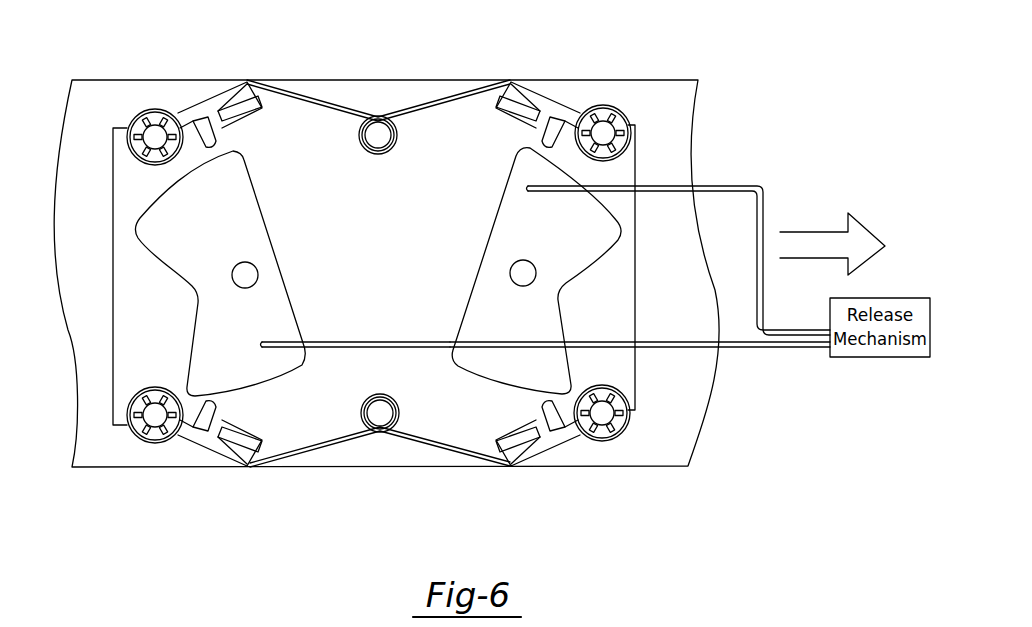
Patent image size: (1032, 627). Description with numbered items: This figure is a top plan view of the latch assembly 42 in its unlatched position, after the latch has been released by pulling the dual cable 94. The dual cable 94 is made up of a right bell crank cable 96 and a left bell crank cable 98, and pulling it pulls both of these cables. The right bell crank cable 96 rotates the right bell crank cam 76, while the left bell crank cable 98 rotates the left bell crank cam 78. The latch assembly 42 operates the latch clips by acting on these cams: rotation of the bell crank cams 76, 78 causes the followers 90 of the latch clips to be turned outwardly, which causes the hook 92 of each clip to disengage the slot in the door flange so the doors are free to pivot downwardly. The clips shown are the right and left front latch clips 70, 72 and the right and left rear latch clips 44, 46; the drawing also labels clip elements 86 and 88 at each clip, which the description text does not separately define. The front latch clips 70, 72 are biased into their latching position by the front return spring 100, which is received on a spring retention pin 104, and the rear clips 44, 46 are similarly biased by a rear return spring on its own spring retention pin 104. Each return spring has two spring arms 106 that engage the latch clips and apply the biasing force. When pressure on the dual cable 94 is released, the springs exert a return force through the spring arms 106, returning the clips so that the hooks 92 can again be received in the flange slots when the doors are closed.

The latch assembly 42 is at (74, 128).
The right rear latch clip 44 is at (605, 450).
The left rear latch clip 46 is at (153, 453).
The right front latch clip 70 is at (622, 92).
The left front latch clip 72 is at (153, 92).
The bell crank cam 76 is at (482, 307).
The bell crank cam 78 is at (282, 306).
The pinion gear 86 is at (150, 135).
The gear bushing 88 is at (622, 113).
The follower 90 is at (215, 148).
The hook 92 is at (492, 108).
The dual cable 94 is at (782, 349).
The right bell crank cable 96 is at (760, 185).
The left bell crank cable 98 is at (322, 350).
The front return spring 100 is at (372, 118).
The spring retention pin 104 is at (378, 136).
The spring arm 106 is at (318, 95).